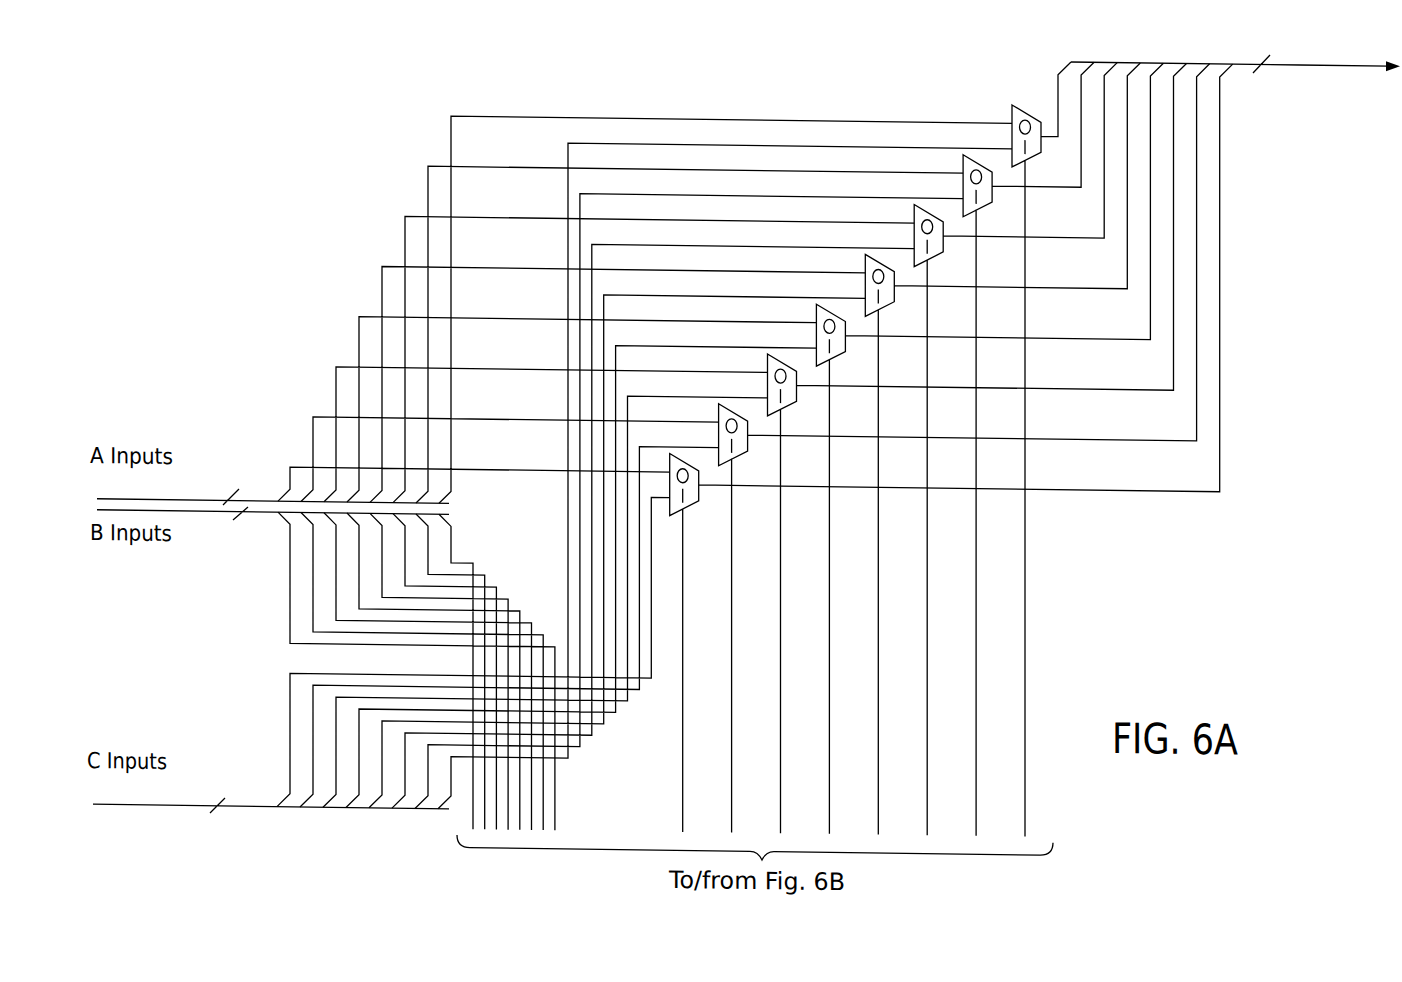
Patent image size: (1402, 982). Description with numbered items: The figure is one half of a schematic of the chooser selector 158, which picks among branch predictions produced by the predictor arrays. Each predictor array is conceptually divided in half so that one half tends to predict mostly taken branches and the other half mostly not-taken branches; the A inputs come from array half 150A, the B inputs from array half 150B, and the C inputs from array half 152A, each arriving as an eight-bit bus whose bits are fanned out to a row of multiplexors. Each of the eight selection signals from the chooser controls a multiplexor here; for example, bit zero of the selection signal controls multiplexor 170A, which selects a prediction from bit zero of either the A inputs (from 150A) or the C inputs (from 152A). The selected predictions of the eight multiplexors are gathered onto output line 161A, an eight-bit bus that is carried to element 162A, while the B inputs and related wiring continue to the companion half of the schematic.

The chooser selector 158 is at (300, 165).
The multiplexor 170A is at (1022, 92).
The output line 161A is at (1290, 50).
The destination register 162A is at (1350, 78).
The predictor array half 150A is at (269, 488).
The predictor array half 150B is at (269, 540).
The predictor array half 152A is at (268, 804).